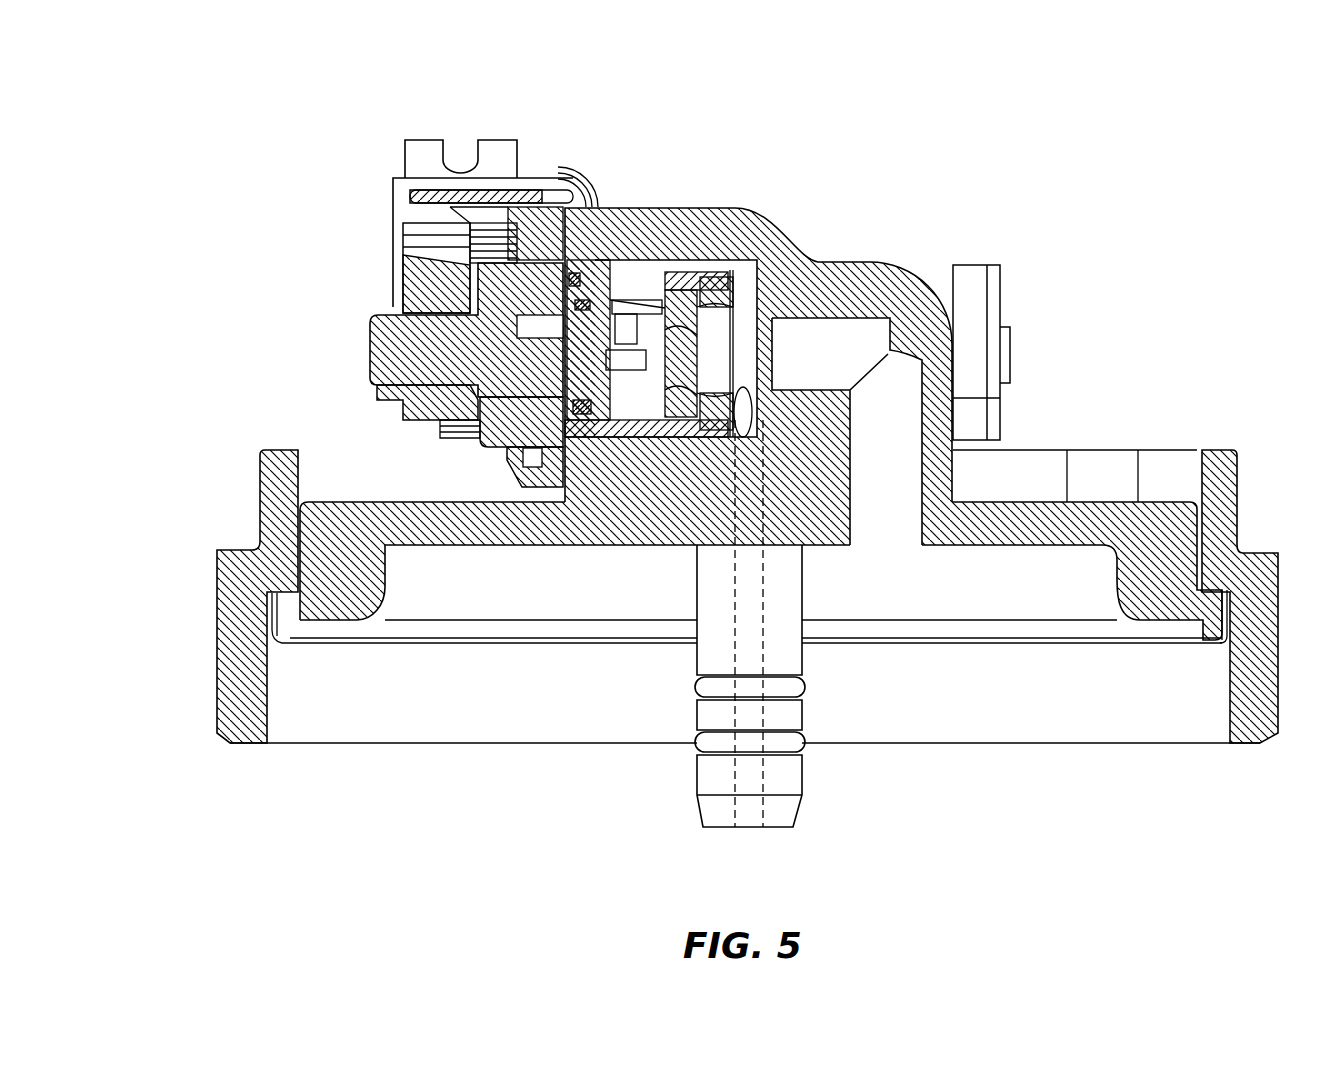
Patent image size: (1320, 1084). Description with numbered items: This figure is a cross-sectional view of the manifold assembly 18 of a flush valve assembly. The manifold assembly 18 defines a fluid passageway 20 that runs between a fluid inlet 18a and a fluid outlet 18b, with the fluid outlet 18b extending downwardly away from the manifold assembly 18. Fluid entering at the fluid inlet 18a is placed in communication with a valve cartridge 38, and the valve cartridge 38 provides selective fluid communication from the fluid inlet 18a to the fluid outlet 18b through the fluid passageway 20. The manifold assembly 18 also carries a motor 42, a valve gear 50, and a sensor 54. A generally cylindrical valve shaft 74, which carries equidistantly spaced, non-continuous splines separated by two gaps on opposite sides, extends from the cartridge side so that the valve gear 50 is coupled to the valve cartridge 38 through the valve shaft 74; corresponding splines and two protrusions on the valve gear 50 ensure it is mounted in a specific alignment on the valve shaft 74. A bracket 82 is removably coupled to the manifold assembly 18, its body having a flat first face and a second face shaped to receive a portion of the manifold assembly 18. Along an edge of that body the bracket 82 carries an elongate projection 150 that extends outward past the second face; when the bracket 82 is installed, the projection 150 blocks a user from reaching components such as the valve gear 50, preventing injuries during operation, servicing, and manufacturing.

The manifold assembly 18 is at (217, 680).
The fluid inlet 18a is at (893, 558).
The fluid outlet 18b is at (746, 838).
The fluid passageway 20 is at (860, 323).
The valve cartridge 38 is at (403, 417).
The motor 42 is at (1003, 308).
The valve gear 50 is at (396, 268).
The sensor 54 is at (405, 178).
The valve shaft 74 is at (370, 339).
The bracket 82 is at (518, 486).
The elongate projection 150 is at (490, 192).